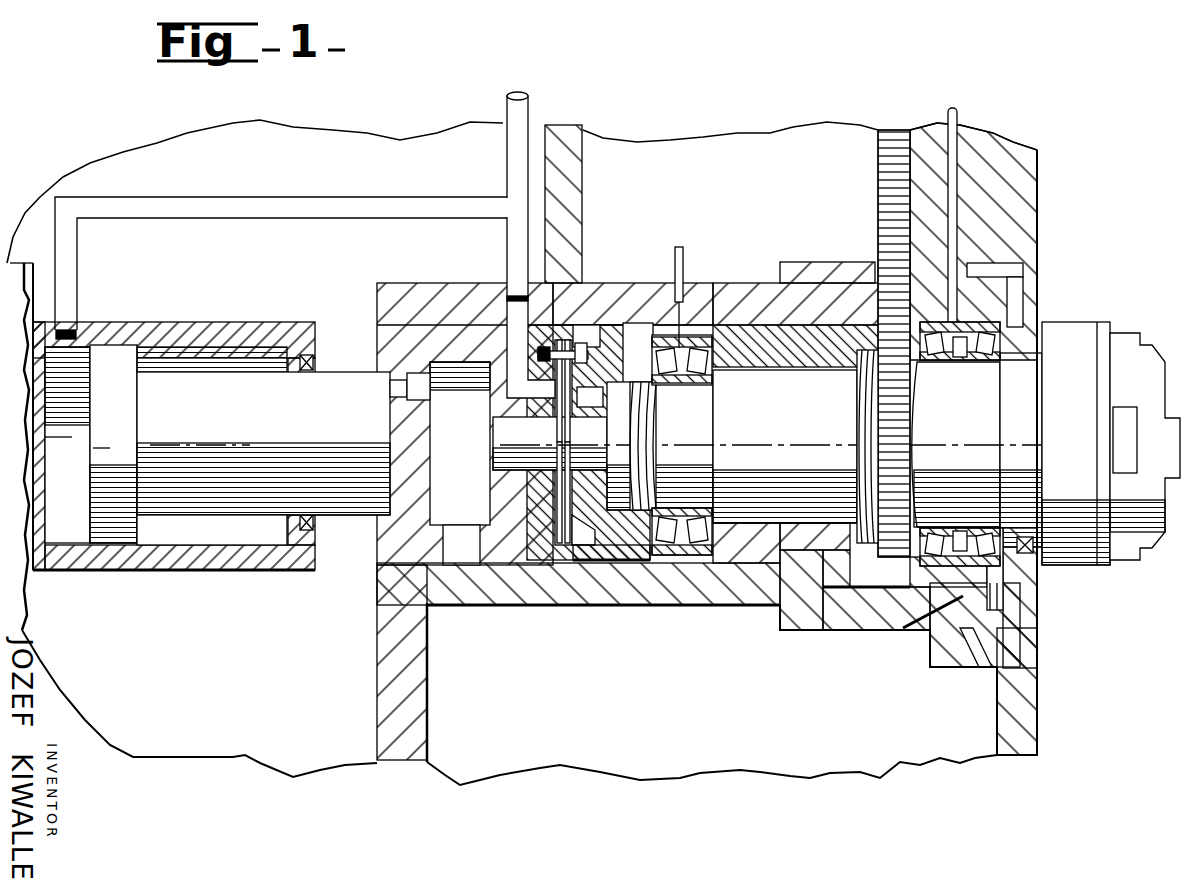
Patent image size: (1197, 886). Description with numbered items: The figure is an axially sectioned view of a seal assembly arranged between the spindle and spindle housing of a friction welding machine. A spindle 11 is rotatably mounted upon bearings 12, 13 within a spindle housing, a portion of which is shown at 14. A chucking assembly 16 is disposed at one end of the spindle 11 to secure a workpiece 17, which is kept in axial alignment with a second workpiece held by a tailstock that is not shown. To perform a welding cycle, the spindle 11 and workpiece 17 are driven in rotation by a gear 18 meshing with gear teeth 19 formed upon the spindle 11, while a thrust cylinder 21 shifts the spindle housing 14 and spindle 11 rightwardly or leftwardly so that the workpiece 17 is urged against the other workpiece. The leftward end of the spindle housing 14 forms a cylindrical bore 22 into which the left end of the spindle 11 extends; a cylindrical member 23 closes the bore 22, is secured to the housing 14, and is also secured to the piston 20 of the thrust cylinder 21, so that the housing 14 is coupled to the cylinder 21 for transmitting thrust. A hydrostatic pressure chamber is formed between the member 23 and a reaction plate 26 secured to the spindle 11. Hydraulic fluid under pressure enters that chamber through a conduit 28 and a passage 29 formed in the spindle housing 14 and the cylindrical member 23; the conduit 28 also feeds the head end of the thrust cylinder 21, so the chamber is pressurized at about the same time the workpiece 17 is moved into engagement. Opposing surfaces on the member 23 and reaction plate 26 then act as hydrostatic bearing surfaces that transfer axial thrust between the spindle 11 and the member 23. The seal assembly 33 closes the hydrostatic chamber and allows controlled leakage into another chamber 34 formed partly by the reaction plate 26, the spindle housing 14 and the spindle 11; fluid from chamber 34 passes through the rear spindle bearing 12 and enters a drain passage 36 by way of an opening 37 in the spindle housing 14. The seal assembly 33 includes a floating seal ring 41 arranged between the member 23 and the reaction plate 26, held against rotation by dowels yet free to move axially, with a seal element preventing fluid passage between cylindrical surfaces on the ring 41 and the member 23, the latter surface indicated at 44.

The spindle 11 is at (790, 414).
The bearing 12 is at (672, 552).
The bearing 13 is at (955, 365).
The spindle housing 14 is at (580, 192).
The chucking assembly 16 is at (1125, 345).
The workpiece 17 is at (1125, 437).
The gear 18 is at (880, 188).
The gear teeth 19 is at (866, 400).
The piston 20 is at (272, 414).
The thrust cylinder 21 is at (160, 572).
The cylindrical bore 22 is at (683, 327).
The cylindrical member 23 is at (378, 330).
The reaction plate 26 is at (655, 330).
The conduit 28 is at (507, 150).
The passage 29 is at (507, 345).
The seal assembly 33 is at (603, 565).
The chamber 34 is at (663, 384).
The drain passage 36 is at (524, 720).
The opening 37 is at (714, 605).
The floating seal ring 41 is at (586, 327).
The cylindrical surface 44 is at (556, 538).